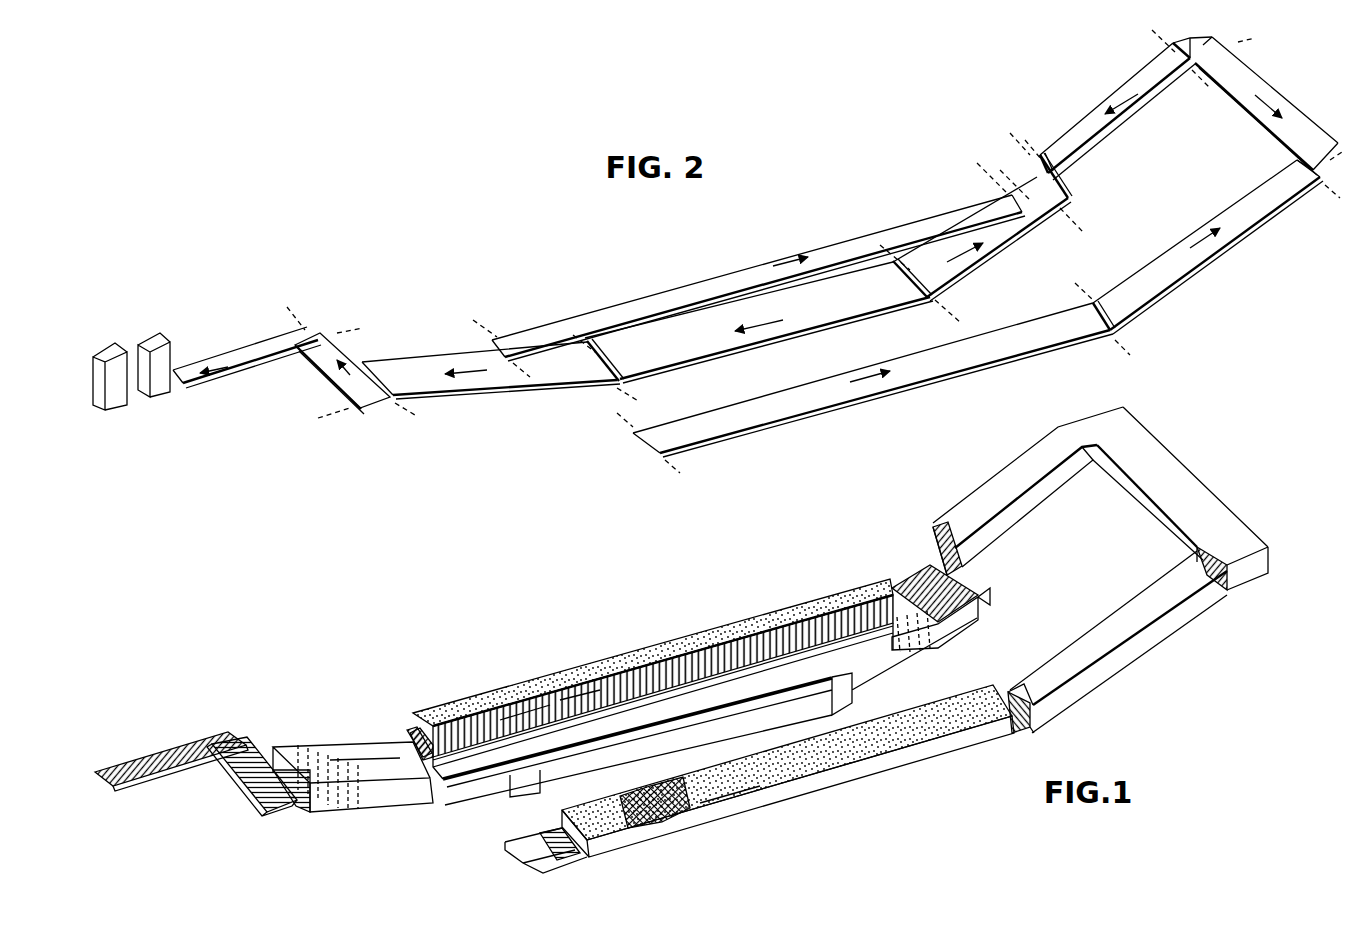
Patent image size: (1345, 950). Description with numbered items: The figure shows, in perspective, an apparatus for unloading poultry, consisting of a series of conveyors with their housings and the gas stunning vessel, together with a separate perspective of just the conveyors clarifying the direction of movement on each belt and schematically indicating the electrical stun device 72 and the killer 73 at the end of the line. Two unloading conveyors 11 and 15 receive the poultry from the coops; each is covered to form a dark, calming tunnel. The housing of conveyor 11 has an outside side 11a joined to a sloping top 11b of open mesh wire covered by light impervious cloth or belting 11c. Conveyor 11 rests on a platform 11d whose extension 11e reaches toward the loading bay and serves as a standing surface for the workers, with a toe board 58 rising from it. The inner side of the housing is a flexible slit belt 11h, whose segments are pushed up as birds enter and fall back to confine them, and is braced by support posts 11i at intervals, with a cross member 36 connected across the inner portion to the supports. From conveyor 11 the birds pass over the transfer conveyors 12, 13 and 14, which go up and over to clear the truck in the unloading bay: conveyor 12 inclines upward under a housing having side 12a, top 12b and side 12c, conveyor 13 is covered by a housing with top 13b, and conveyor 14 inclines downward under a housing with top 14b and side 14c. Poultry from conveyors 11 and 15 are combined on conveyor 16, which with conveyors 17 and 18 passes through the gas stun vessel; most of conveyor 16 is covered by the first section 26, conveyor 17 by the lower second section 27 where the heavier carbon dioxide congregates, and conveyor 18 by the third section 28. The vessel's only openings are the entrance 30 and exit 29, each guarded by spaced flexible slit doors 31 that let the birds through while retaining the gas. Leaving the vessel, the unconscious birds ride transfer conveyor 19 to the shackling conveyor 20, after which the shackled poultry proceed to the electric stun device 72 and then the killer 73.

In FIG. 2, the conveyor 11 is at (770, 412).
In FIG. 1, the conveyor 11 is at (586, 848).
In FIG. 1, the outside side 11a is at (767, 800).
In FIG. 1, the sloping top 11b is at (668, 820).
In FIG. 1, the cloth or belting 11c is at (838, 756).
In FIG. 1, the platform 11d is at (543, 866).
In FIG. 1, the extension 11e is at (480, 848).
In FIG. 1, the belt 11h is at (603, 690).
In FIG. 1, the support posts 11i is at (548, 714).
In FIG. 2, the transfer conveyor 12 is at (1215, 246).
In FIG. 1, the transfer conveyor 12 is at (1034, 716).
In FIG. 1, the side 12a is at (1113, 660).
In FIG. 1, the top 12b is at (1087, 635).
In FIG. 1, the side 12c is at (1010, 690).
In FIG. 2, the transfer conveyor 13 is at (1250, 108).
In FIG. 1, the transfer conveyor 13 is at (1222, 548).
In FIG. 1, the top 13b is at (1170, 457).
In FIG. 2, the transfer conveyor 14 is at (1138, 102).
In FIG. 1, the transfer conveyor 14 is at (935, 540).
In FIG. 1, the top 14b is at (1020, 462).
In FIG. 1, the side 14c is at (937, 530).
In FIG. 2, the conveyor 15 is at (742, 277).
In FIG. 1, the conveyor 15 is at (412, 735).
In FIG. 2, the conveyor 16 is at (985, 240).
In FIG. 1, the conveyor 16 is at (913, 578).
In FIG. 2, the conveyor 17 is at (740, 340).
In FIG. 2, the conveyor 18 is at (479, 388).
In FIG. 1, the conveyor 18 is at (297, 808).
In FIG. 2, the transfer conveyor 19 is at (332, 382).
In FIG. 1, the transfer conveyor 19 is at (248, 778).
In FIG. 2, the shackling conveyor 20 is at (238, 360).
In FIG. 1, the shackling conveyor 20 is at (160, 758).
In FIG. 1, the first section 26 is at (962, 618).
In FIG. 1, the second section 27 is at (742, 729).
In FIG. 1, the third section 28 is at (417, 800).
In FIG. 1, the exit 29 is at (413, 728).
In FIG. 1, the entrance 30 is at (888, 584).
In FIG. 1, the flexible doors 31 is at (300, 742).
In FIG. 1, the cross member 36 is at (365, 761).
In FIG. 1, the toe board 58 is at (630, 733).
In FIG. 2, the electric stun device 72 is at (150, 345).
In FIG. 2, the killer 73 is at (105, 357).